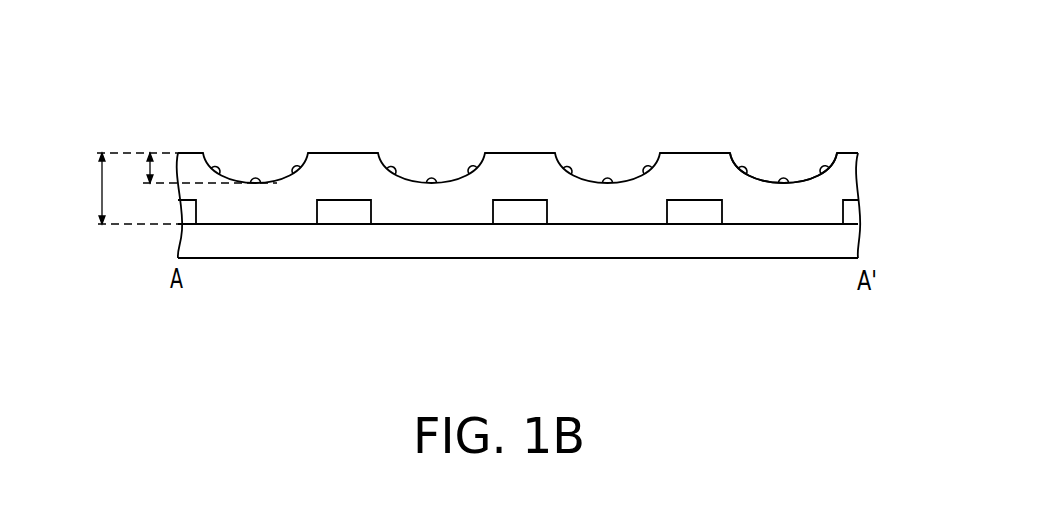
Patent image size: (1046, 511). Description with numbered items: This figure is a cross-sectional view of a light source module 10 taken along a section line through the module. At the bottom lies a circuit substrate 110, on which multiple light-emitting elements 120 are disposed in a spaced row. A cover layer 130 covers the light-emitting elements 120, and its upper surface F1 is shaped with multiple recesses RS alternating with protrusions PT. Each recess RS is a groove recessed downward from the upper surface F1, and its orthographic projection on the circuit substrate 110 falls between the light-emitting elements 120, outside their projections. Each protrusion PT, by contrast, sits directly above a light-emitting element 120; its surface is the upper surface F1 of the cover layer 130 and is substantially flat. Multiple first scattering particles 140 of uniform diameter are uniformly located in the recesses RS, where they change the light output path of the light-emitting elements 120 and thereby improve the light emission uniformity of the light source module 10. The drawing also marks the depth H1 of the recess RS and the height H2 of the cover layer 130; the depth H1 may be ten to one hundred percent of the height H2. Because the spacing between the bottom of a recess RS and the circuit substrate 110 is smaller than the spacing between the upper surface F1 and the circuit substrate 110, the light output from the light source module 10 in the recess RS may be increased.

The light source module 10 is at (908, 358).
The circuit substrate 110 is at (843, 242).
The light-emitting elements 120 is at (848, 215).
The cover layer 130 is at (843, 183).
The first scattering particles 140 is at (257, 177).
The protrusion PT is at (520, 152).
The recess RS is at (780, 155).
The upper surface F1 is at (847, 153).
The depth of the recess H1 is at (187, 169).
The height of the cover layer H2 is at (125, 188).